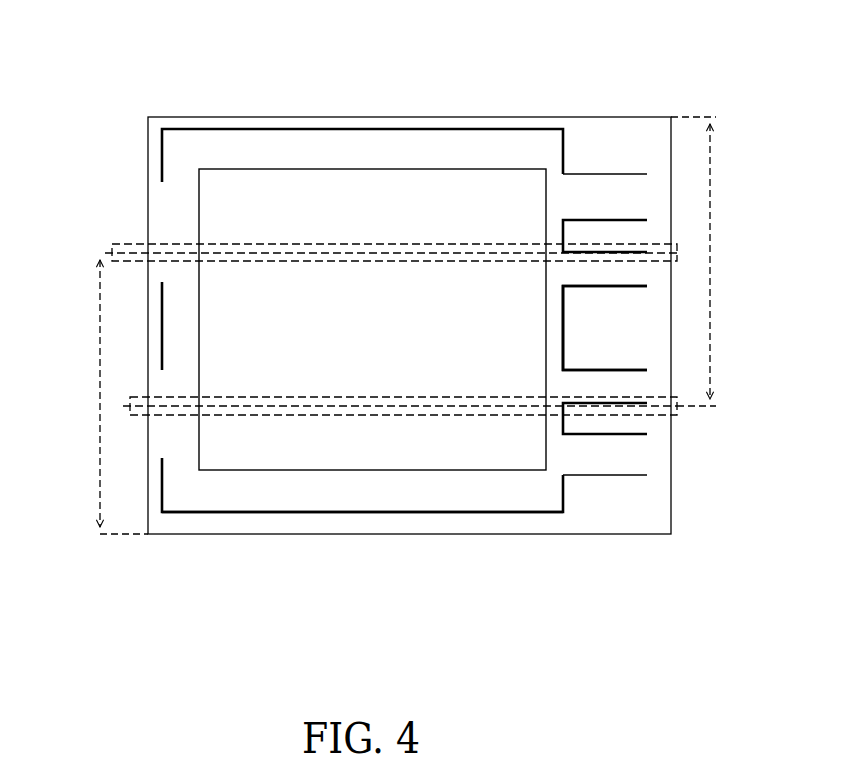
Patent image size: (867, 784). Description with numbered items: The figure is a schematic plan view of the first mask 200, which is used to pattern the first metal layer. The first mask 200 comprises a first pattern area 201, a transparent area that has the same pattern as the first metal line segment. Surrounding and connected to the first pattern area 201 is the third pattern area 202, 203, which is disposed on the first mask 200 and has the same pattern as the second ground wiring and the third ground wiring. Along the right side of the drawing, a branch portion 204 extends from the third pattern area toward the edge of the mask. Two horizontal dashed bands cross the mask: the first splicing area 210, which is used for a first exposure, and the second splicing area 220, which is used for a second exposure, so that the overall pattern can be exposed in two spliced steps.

The first mask 200 is at (293, 92).
The first pattern area 201 is at (162, 153).
The third pattern area 202 is at (205, 128).
The third pattern area 203 is at (307, 512).
The branch pattern 204 is at (593, 370).
The first splicing area 210 is at (620, 416).
The second splicing area 220 is at (622, 262).